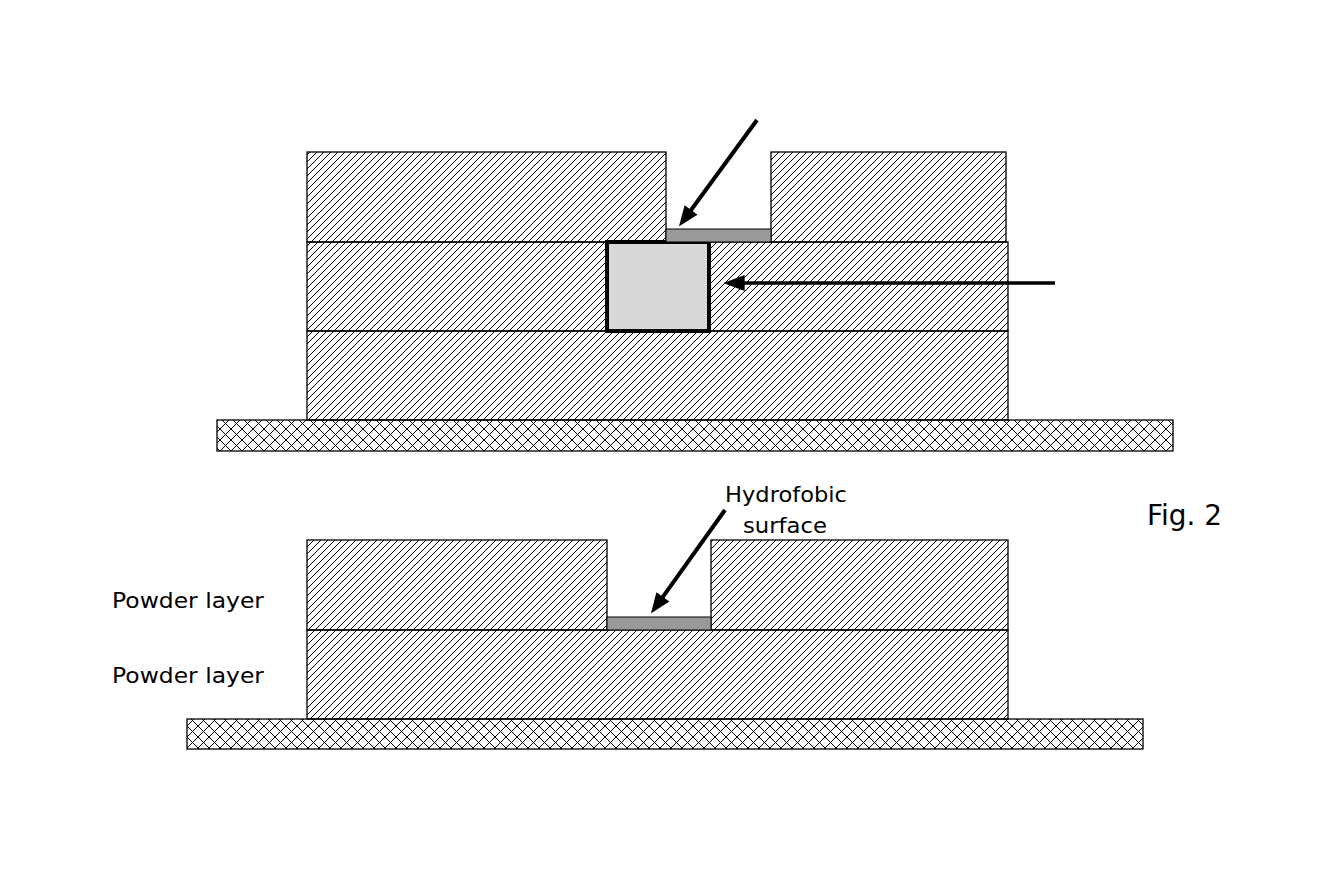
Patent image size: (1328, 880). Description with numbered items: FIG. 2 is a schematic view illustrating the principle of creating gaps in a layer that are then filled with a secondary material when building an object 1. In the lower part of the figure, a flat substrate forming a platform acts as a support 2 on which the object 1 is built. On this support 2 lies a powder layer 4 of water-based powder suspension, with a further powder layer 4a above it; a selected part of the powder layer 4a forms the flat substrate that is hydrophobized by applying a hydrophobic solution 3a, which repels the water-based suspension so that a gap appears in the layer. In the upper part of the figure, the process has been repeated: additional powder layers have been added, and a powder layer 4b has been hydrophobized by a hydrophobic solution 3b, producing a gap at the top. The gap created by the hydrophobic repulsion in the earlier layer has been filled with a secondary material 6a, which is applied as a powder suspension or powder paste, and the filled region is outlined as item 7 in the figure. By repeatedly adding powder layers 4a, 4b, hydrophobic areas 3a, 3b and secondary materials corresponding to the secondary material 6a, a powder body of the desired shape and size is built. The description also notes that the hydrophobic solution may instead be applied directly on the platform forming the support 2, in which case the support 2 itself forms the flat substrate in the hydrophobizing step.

The object 1 is at (750, 254).
The support 2 is at (1124, 752).
The hydrophobic solution 3a is at (620, 617).
The hydrophobic solution 3b is at (720, 233).
The powder layer 4 is at (1000, 672).
The powder layer 4a is at (997, 593).
The powder layer 4b is at (997, 190).
The secondary material 6a is at (640, 275).
The secondary material region / cavity 7 is at (607, 194).